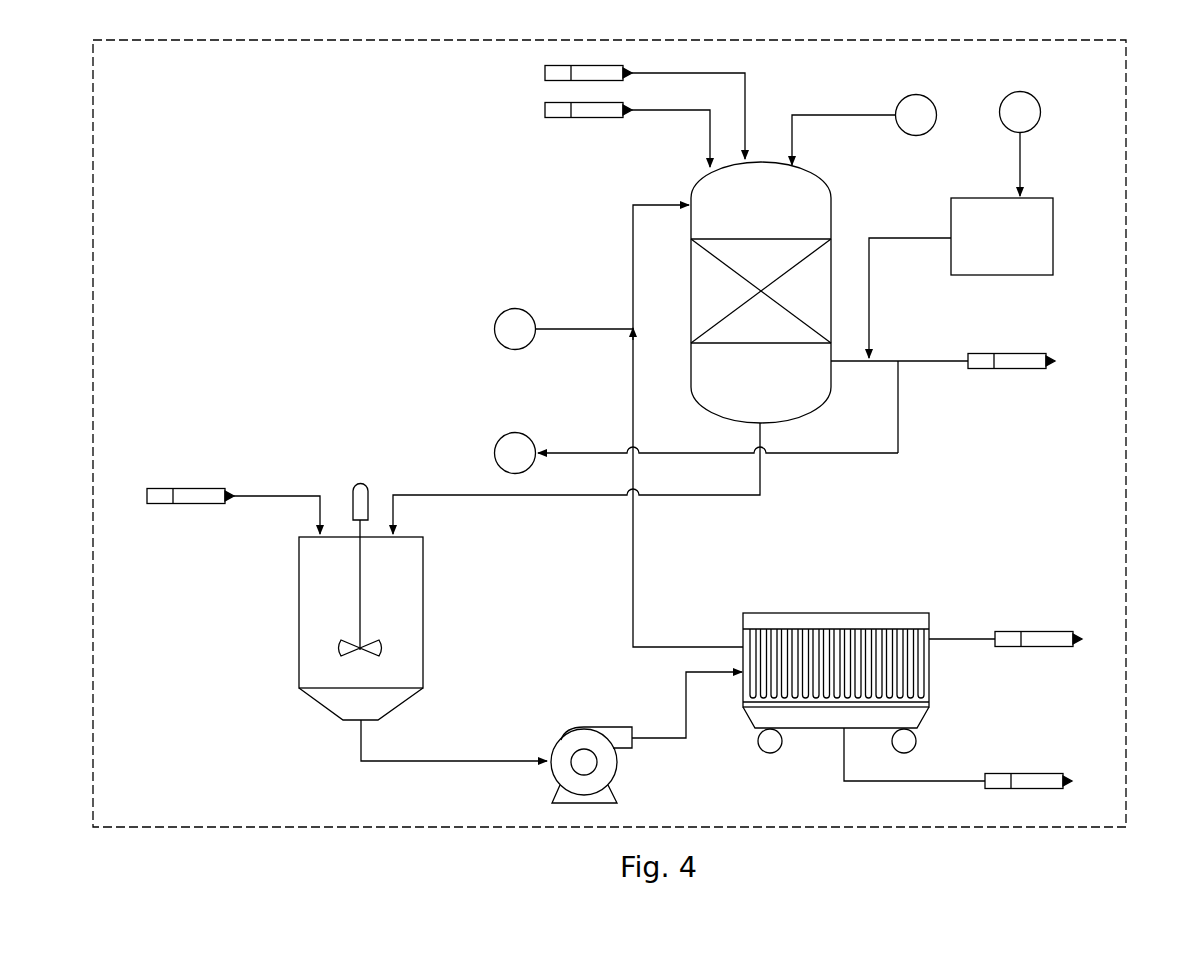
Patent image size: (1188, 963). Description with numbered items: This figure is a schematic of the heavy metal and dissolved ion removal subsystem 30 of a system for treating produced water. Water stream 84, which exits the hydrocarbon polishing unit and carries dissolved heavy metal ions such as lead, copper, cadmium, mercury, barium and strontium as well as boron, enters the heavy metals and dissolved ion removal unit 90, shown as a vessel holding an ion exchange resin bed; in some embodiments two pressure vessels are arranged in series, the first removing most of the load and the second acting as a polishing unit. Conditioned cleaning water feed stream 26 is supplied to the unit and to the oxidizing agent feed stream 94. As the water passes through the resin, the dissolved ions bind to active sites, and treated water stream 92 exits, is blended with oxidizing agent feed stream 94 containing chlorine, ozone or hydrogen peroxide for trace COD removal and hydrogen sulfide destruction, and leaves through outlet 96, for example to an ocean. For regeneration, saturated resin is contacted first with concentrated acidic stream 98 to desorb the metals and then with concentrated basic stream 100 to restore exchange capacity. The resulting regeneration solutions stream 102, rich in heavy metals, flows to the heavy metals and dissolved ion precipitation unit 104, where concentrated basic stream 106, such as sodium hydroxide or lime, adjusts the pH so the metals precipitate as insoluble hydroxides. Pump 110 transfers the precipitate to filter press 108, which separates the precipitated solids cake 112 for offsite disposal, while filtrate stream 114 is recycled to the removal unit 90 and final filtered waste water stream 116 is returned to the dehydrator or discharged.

The heavy metal and dissolved ion removal subsystem 30 is at (1126, 218).
The conditioned cleaning water feed stream 26 is at (853, 117).
The water stream 84 is at (579, 329).
The heavy metals and dissolved ion removal unit 90 is at (831, 196).
The treated water stream 92 is at (935, 358).
The oxidizing agent feed stream 94 is at (988, 208).
The outlet 96 is at (1020, 369).
The concentrated acidic stream 98 is at (543, 73).
The concentrated basic stream 100 is at (543, 110).
The regeneration solutions stream 102 is at (760, 478).
The heavy metals and dissolved ion precipitation unit 104 is at (299, 598).
The concentrated basic stream 106 is at (195, 488).
The filter press 108 is at (805, 612).
The pump 110 is at (553, 778).
The precipitated solids cake 112 is at (1035, 773).
The filtrate stream 114 is at (633, 540).
The final filtered waste water stream 116 is at (1043, 632).